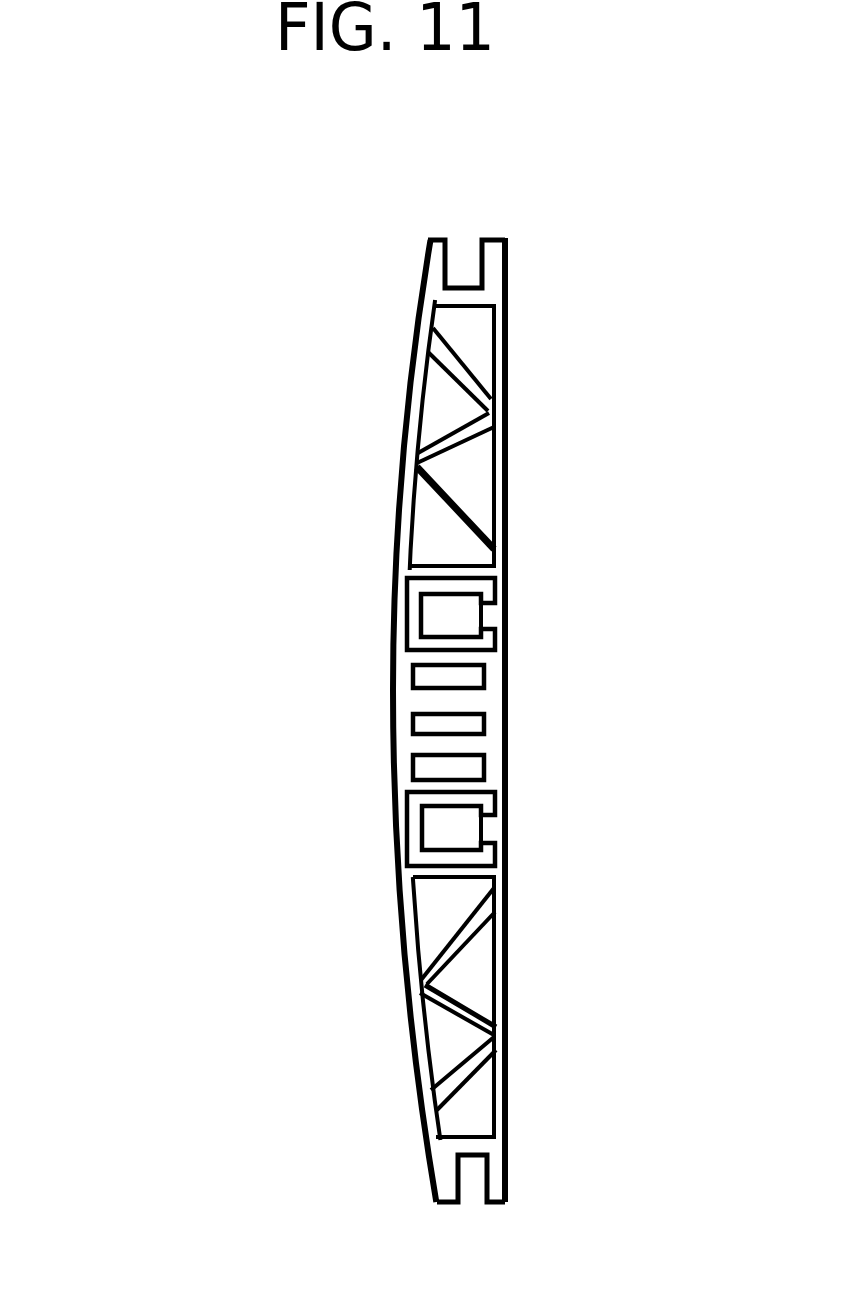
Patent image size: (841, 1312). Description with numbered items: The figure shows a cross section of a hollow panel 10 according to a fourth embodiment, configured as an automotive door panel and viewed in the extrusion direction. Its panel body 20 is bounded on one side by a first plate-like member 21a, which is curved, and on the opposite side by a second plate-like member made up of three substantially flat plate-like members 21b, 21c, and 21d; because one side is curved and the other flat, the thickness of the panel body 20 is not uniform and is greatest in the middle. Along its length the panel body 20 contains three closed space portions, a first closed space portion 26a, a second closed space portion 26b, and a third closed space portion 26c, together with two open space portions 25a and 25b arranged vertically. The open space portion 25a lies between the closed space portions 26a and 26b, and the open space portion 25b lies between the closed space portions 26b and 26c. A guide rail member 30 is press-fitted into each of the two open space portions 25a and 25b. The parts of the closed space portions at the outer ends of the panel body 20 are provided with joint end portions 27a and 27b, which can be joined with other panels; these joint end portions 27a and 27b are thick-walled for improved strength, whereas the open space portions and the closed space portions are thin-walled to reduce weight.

The hollow panel 10 is at (584, 297).
The panel body 20 is at (137, 321).
The first plate-like member 21a is at (403, 437).
The plate-like member 21b is at (417, 436).
The plate-like member 21c is at (417, 722).
The plate-like member 21d is at (419, 1007).
The open space portion 25a is at (370, 613).
The open space portion 25b is at (372, 825).
The first closed space portion 26a is at (375, 468).
The second closed space portion 26b is at (370, 718).
The third closed space portion 26c is at (384, 979).
The joint end portion 27a is at (396, 273).
The joint end portion 27b is at (405, 1184).
The guide rail member 30 is at (466, 617).